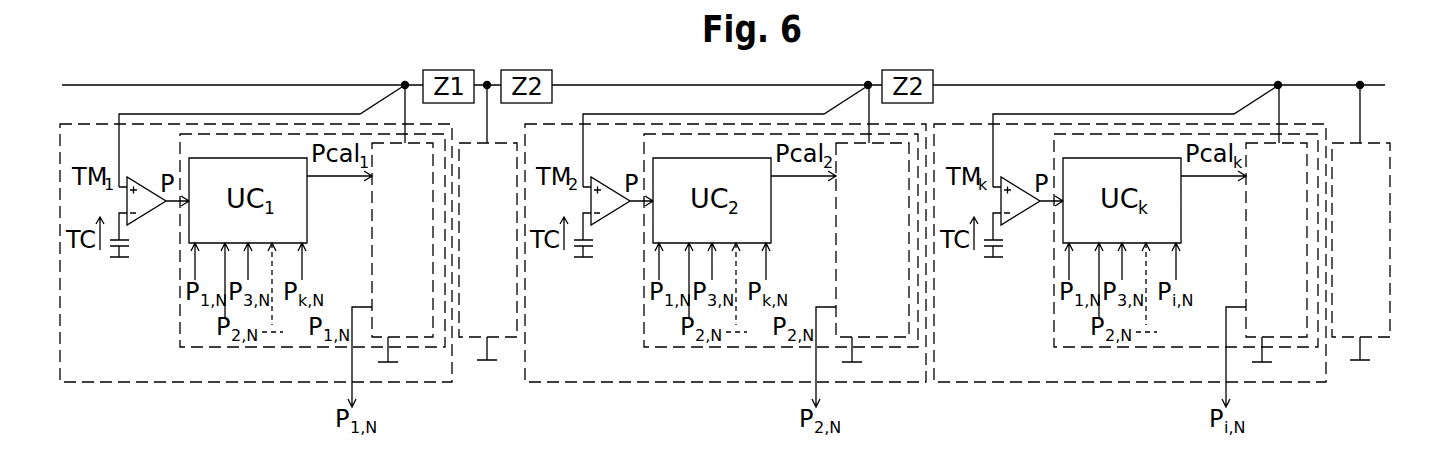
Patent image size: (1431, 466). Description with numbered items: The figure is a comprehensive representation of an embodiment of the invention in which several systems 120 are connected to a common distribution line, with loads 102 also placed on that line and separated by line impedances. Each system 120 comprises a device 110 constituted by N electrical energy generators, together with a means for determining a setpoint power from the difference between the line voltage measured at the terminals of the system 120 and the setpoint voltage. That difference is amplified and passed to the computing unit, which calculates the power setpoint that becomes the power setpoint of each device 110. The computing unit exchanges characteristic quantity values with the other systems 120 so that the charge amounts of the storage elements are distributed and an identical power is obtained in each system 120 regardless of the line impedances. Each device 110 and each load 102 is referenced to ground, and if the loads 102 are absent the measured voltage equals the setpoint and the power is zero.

The device 110 is at (426, 315).
The system 120 is at (450, 373).
The load 102 is at (514, 315).